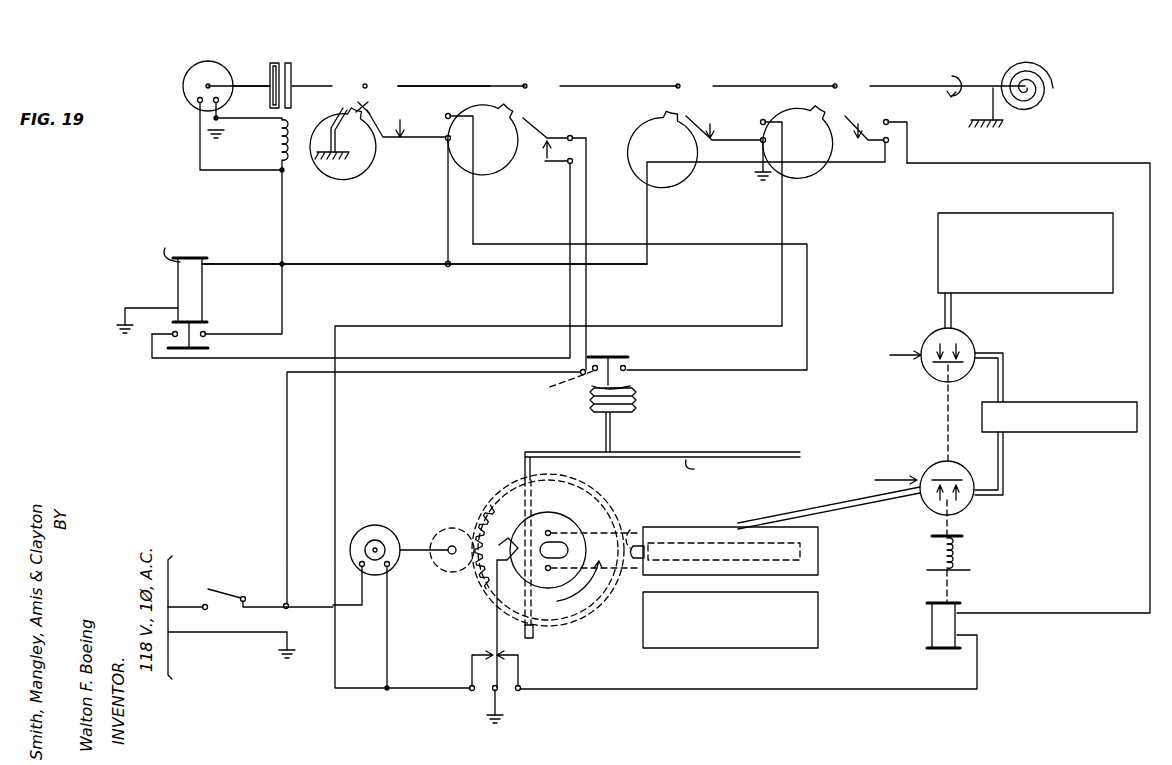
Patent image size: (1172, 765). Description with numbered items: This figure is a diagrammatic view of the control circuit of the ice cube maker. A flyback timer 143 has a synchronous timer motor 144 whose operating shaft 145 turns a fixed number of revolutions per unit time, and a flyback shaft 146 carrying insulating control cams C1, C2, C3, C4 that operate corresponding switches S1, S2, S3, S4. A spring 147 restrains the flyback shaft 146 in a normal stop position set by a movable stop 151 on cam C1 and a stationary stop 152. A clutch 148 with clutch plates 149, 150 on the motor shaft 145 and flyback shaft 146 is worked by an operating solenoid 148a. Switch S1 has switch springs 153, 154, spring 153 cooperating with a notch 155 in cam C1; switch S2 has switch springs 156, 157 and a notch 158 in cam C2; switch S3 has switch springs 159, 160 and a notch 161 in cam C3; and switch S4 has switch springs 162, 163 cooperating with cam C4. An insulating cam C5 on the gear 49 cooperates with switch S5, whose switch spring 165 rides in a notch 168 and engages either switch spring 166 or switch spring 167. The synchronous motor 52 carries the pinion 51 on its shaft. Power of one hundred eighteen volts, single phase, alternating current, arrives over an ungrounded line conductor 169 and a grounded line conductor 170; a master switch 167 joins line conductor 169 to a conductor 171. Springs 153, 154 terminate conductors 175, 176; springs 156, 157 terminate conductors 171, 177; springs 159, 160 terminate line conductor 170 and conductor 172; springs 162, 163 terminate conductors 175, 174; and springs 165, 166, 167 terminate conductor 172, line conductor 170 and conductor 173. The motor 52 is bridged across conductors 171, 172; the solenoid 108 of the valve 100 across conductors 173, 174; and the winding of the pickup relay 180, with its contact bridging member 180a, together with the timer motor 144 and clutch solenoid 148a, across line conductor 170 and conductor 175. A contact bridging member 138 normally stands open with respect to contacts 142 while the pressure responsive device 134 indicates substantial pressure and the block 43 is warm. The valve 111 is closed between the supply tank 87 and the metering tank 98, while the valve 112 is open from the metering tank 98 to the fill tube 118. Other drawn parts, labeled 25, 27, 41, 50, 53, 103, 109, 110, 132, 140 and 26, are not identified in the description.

The flyback timer 143 is at (170, 66).
The timer motor 144 is at (203, 66).
The operating shaft 145 is at (248, 84).
The flyback shaft 146 is at (452, 84).
The spring 147 is at (1040, 62).
The clutch 148 is at (285, 45).
The operating solenoid 148a is at (274, 150).
The clutch plate 149 is at (270, 63).
The clutch plate 150 is at (292, 63).
The movable stop 151 is at (330, 108).
The stationary stop 152 is at (355, 142).
The switch spring 153 is at (444, 140).
The switch spring 154 is at (440, 118).
The notch 155 is at (370, 103).
The switch spring 156 is at (565, 241).
The switch spring 157 is at (540, 152).
The notch 158 is at (527, 100).
The switch spring 159 is at (756, 142).
The switch spring 160 is at (756, 122).
The notch 161 is at (673, 100).
The switch spring 162 is at (876, 142).
The switch spring 163 is at (884, 121).
The switch spring 165 is at (497, 620).
The switch spring 166 is at (472, 672).
The master switch 167 is at (232, 578).
The notch 168 is at (512, 516).
The line conductor 169 is at (184, 604).
The line conductor 170 is at (226, 130).
The conductor 171 is at (276, 398).
The conductor 172 is at (702, 324).
The conductor 173 is at (652, 686).
The conductor 174 is at (966, 164).
The conductor 175 is at (200, 146).
The conductor 176 is at (720, 242).
The conductor 177 is at (265, 360).
The pickup relay 180 is at (198, 288).
The contact bridging member 180a is at (182, 352).
The contact bridging member 138 is at (594, 356).
The contacts 142 is at (627, 368).
The pressure responsive device 134 is at (630, 398).
The rod 132 is at (612, 436).
The bar 25 is at (773, 455).
The stop 140 is at (534, 630).
The plunger 41 is at (656, 540).
The block 43 is at (816, 538).
The housing 27 is at (816, 610).
The fill tube 118 is at (786, 504).
The gear 49 is at (486, 500).
The coil 50 is at (594, 536).
The pinion 51 is at (430, 530).
The motor 52 is at (372, 534).
The motor contact 53 is at (392, 570).
The water supply tank 87 is at (978, 214).
The valve 111 is at (966, 336).
The valve 100 is at (938, 404).
The metering tank 98 is at (1052, 400).
The valve 112 is at (982, 462).
The plate 110 is at (958, 534).
The spring 109 is at (960, 560).
The rod 103 is at (952, 592).
The operating solenoid 108 is at (934, 630).
The dispensing assembly 26 is at (1064, 515).
The insulating control cam C1 is at (372, 62).
The insulating control cam C2 is at (542, 62).
The insulating control cam C3 is at (698, 62).
The insulating control cam C4 is at (852, 62).
The insulating cam C5 is at (560, 526).
The switch S1 is at (408, 175).
The switch S2 is at (532, 181).
The switch S3 is at (683, 181).
The switch S4 is at (850, 181).
The switch S5 is at (450, 655).